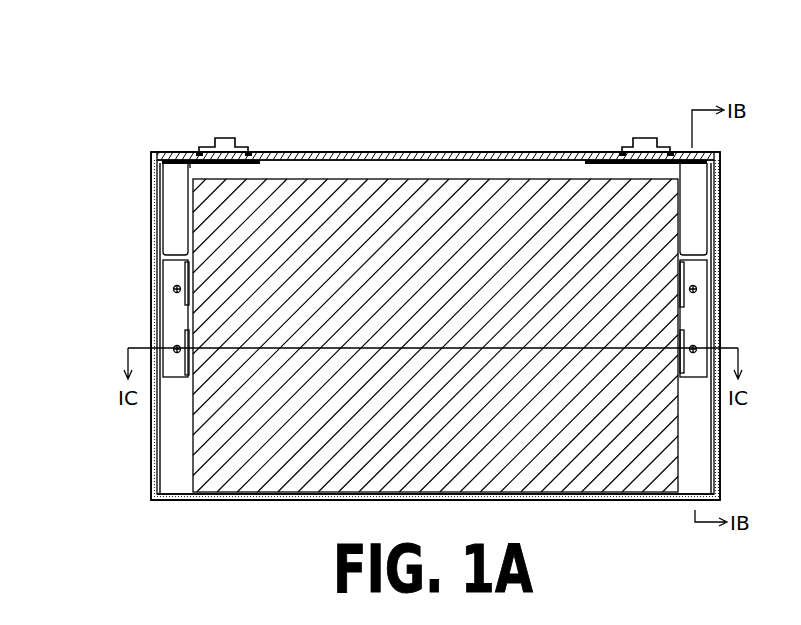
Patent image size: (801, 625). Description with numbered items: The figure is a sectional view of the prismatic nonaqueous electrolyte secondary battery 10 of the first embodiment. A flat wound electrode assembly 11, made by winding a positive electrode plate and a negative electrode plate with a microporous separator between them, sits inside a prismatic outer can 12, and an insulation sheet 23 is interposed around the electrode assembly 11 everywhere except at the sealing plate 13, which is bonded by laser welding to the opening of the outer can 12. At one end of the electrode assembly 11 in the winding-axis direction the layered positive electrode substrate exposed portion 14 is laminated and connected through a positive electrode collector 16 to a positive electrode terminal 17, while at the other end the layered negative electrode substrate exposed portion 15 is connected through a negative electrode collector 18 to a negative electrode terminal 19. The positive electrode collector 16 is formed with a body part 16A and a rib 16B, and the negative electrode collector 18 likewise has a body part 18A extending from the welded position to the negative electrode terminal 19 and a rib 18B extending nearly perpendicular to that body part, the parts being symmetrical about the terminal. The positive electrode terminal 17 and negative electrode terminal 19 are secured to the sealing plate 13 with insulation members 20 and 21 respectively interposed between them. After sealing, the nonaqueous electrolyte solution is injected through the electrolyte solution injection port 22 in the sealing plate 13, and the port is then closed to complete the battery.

The prismatic nonaqueous electrolyte secondary battery 10 is at (136, 86).
The flat wound electrode assembly 11 is at (555, 479).
The prismatic outer can 12 is at (720, 479).
The sealing plate 13 is at (447, 153).
The positive electrode substrate exposed portion 14 is at (167, 452).
The negative electrode substrate exposed portion 15 is at (695, 437).
The positive electrode collector 16 is at (158, 177).
The body part 16A is at (170, 310).
The rib 16B is at (186, 280).
The positive electrode terminal 17 is at (225, 138).
The negative electrode collector 18 is at (702, 180).
The body part 18A is at (700, 303).
The rib 18B is at (684, 268).
The negative electrode terminal 19 is at (645, 140).
The insulation member 20 is at (250, 151).
The insulation member 21 is at (621, 151).
The electrolyte solution injection port 22 is at (523, 156).
The insulation sheet 23 is at (280, 500).